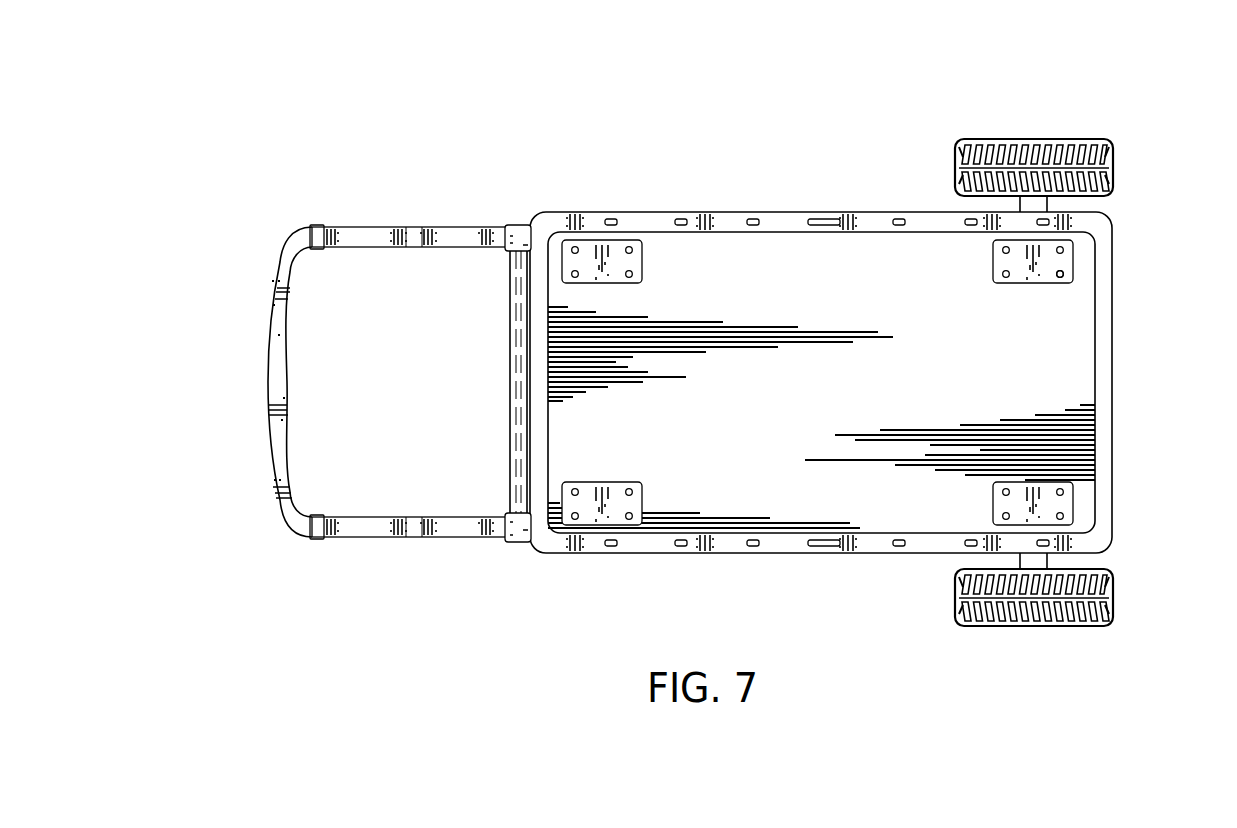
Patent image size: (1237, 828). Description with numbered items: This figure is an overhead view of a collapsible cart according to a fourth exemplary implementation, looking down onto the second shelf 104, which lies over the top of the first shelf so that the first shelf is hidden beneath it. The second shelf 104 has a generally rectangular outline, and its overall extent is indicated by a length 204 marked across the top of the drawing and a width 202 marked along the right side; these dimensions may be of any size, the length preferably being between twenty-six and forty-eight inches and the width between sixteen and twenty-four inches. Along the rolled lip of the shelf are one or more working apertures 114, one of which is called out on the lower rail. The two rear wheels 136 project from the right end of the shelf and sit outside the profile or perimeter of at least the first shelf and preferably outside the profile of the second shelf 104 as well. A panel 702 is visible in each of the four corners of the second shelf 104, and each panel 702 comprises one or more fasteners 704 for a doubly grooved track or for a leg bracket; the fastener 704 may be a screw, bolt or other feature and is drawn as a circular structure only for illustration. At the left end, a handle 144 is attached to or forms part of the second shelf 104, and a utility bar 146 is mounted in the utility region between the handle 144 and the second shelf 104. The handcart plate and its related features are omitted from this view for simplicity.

The second shelf 104 is at (821, 381).
The working aperture 114 is at (895, 545).
The rear wheel 136 is at (1113, 158).
The handle 144 is at (278, 385).
The utility bar 146 is at (512, 438).
The width 202 is at (1130, 212).
The length 204 is at (1110, 93).
The panel 702 is at (1027, 282).
The fastener 704 is at (1061, 278).